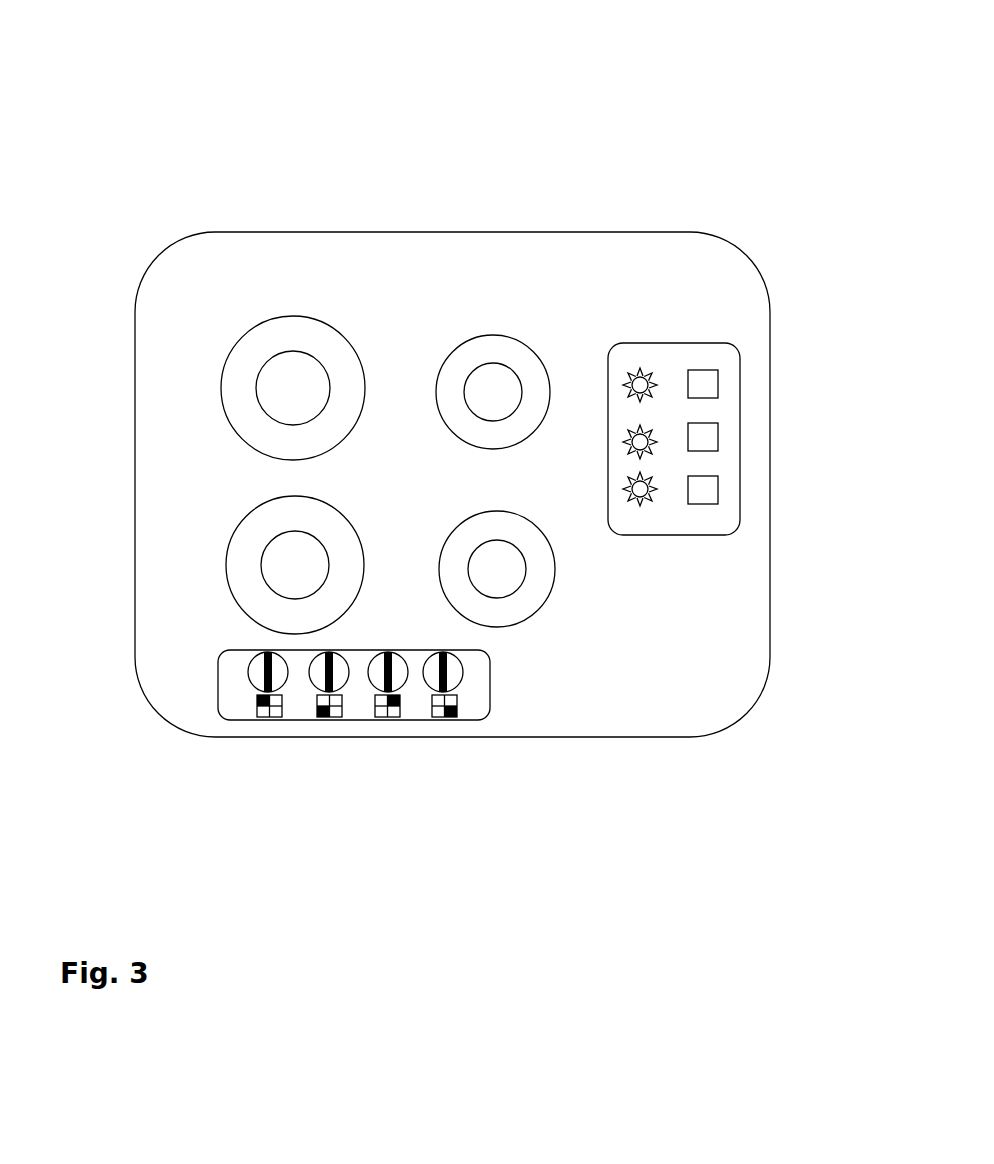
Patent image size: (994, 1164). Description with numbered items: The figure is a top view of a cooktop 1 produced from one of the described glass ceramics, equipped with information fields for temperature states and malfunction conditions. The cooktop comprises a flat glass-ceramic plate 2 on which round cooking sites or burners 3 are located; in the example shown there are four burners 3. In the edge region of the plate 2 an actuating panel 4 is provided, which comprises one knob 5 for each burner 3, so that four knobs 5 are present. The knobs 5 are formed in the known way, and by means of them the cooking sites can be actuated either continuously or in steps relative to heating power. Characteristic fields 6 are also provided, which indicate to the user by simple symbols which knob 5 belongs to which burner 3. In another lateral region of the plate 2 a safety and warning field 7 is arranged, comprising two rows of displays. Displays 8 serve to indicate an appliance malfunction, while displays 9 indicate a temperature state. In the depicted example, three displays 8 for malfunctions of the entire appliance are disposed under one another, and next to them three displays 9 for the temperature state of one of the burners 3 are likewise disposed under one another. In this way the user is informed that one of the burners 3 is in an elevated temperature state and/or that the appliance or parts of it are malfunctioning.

The cooking hob 1 is at (453, 425).
The glass-ceramic plate 2 is at (185, 463).
The burner 3 is at (277, 335).
The actuating panel 4 is at (347, 745).
The knob 5 is at (257, 672).
The characteristic field 6 is at (277, 710).
The safety and warning field 7 is at (718, 387).
The display 8 is at (708, 387).
The display 9 is at (653, 493).